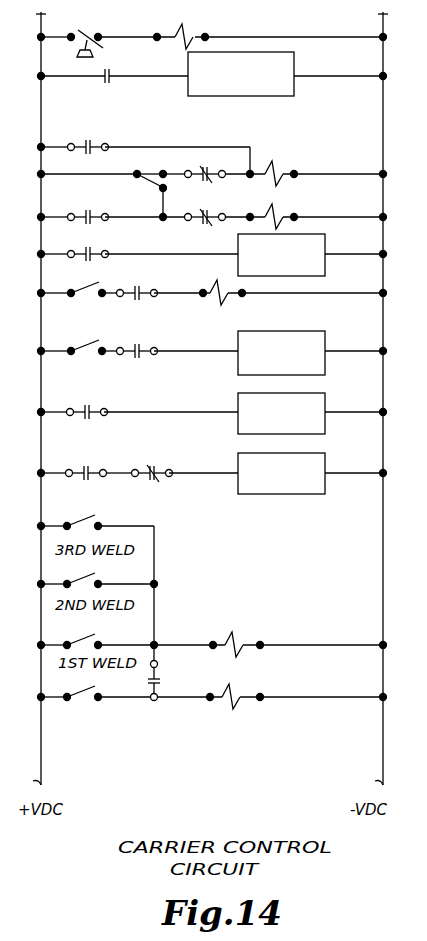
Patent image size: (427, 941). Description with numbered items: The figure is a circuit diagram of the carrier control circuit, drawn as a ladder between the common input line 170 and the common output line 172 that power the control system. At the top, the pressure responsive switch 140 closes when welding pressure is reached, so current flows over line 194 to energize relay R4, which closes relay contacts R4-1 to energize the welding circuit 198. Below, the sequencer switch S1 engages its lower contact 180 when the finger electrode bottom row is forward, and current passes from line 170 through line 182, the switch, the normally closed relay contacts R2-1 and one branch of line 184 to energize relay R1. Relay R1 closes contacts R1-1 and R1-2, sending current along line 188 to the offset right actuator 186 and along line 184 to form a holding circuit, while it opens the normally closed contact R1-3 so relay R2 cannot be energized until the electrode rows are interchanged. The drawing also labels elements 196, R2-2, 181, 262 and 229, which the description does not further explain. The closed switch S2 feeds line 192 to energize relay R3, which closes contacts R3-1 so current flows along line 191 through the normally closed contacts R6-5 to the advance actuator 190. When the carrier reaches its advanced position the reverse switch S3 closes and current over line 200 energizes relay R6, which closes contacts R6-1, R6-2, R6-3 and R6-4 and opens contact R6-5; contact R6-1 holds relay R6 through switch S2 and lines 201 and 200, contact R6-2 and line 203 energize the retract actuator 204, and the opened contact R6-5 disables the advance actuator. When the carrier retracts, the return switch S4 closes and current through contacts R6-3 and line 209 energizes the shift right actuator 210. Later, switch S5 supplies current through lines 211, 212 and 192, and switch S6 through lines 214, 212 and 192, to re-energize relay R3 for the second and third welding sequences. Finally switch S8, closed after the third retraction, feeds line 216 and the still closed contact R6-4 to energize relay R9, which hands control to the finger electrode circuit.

The pressure responsive switch 140 is at (88, 27).
The line 194 is at (134, 36).
The relay R4 is at (187, 22).
The relay contacts R4-1 is at (104, 81).
The conductor 196 is at (165, 79).
The welding circuit 198 is at (295, 60).
The relay R2 contact R2-2 is at (100, 143).
The conductor 229 is at (208, 135).
The line 182 is at (78, 173).
The conductor 181 is at (161, 171).
The conductor 262 is at (180, 168).
The normally closed relay contact R1-3 is at (236, 159).
The relay R2 is at (277, 168).
The sequencer switch S1 is at (150, 183).
The lower contact 180 is at (167, 191).
The relay contacts R1-2 is at (86, 209).
The line 184 is at (162, 221).
The normally closed relay contacts R2-1 is at (208, 210).
The relay R1 is at (281, 210).
The relay contacts R1-1 is at (84, 253).
The line 188 is at (196, 252).
The offset right actuator 186 is at (326, 240).
The switch S8 is at (79, 289).
The relay contact R6-4 is at (150, 271).
The line 216 is at (163, 292).
The relay R9 is at (228, 300).
The return switch S4 is at (79, 342).
The relay contacts R6-3 is at (152, 324).
The line 209 is at (216, 349).
The shift right actuator 210 is at (325, 336).
The relay contact R6-2 is at (86, 408).
The line 203 is at (206, 411).
The retract actuator 204 is at (324, 404).
The relay contacts R3-1 is at (92, 467).
The normally closed contact R6-5 is at (160, 481).
The line 191 is at (207, 468).
The advance actuator 190 is at (327, 468).
The switch S6 is at (85, 518).
The line 214 is at (140, 514).
The switch S5 is at (79, 582).
The line 211 is at (138, 574).
The line 212 is at (158, 597).
The switch S2 is at (85, 640).
The line 192 is at (146, 645).
The relay R3 is at (243, 632).
The line 201 is at (149, 657).
The relay contact R6-1 is at (159, 670).
The reverse switch S3 is at (90, 702).
The line 200 is at (141, 699).
The relay R6 is at (235, 712).
The input line 170 is at (41, 742).
The output line 172 is at (378, 742).